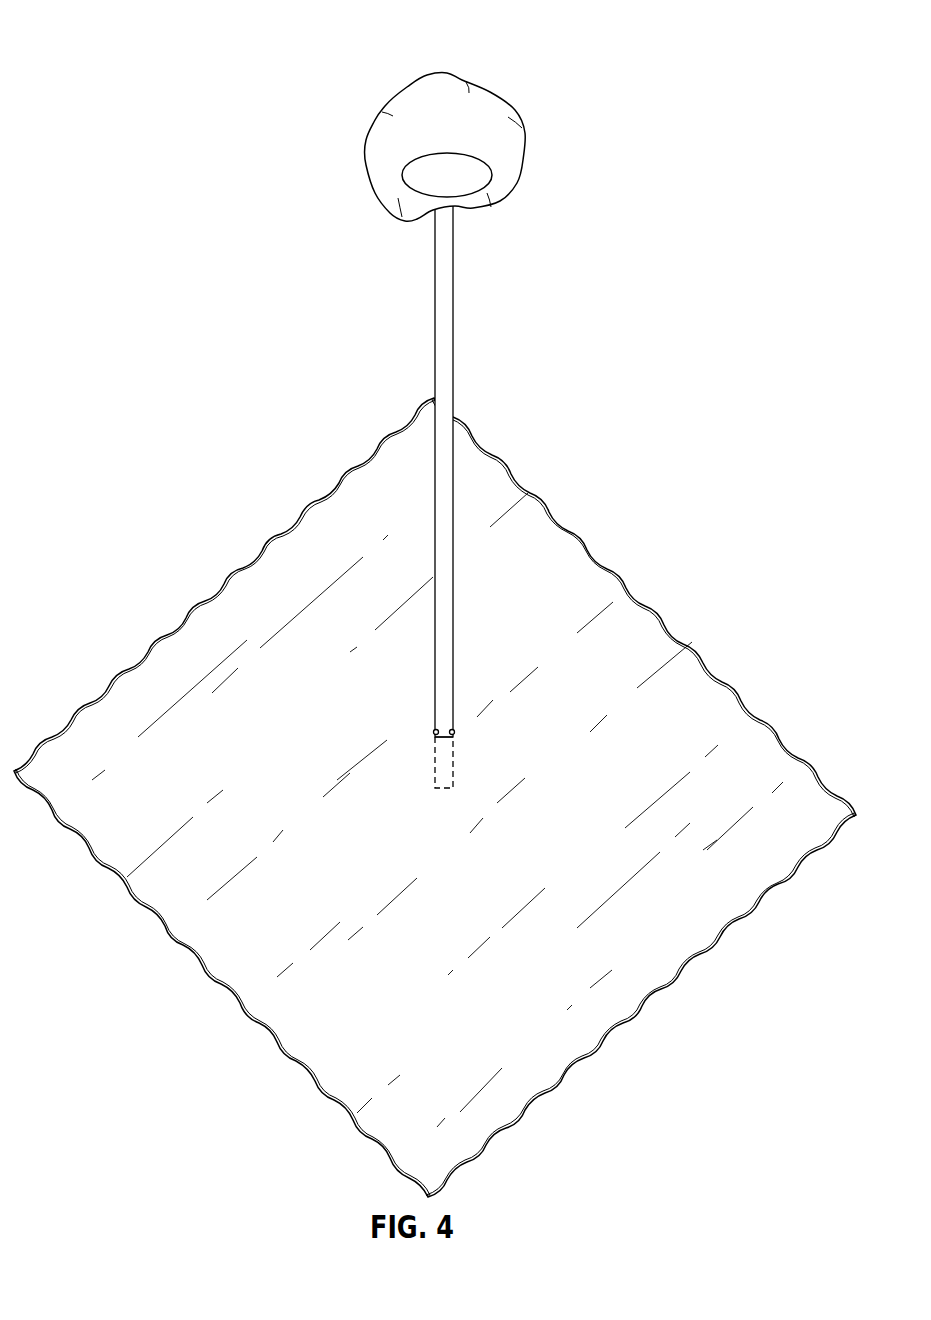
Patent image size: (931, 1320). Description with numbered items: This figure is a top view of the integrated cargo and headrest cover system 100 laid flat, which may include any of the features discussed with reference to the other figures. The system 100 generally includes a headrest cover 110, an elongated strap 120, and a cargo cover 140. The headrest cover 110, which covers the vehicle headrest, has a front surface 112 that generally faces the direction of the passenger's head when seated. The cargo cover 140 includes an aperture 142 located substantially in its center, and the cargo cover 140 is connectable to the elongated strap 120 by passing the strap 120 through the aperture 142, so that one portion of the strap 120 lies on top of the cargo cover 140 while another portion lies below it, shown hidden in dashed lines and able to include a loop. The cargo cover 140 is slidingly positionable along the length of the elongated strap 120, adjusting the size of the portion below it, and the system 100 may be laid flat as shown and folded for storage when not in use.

The integrated cargo and headrest cover system 100 is at (254, 42).
The headrest cover 110 is at (376, 91).
The front surface 112 is at (468, 132).
The elongated strap 120 is at (426, 282).
The cargo cover 140 is at (175, 615).
The aperture 142 is at (455, 733).